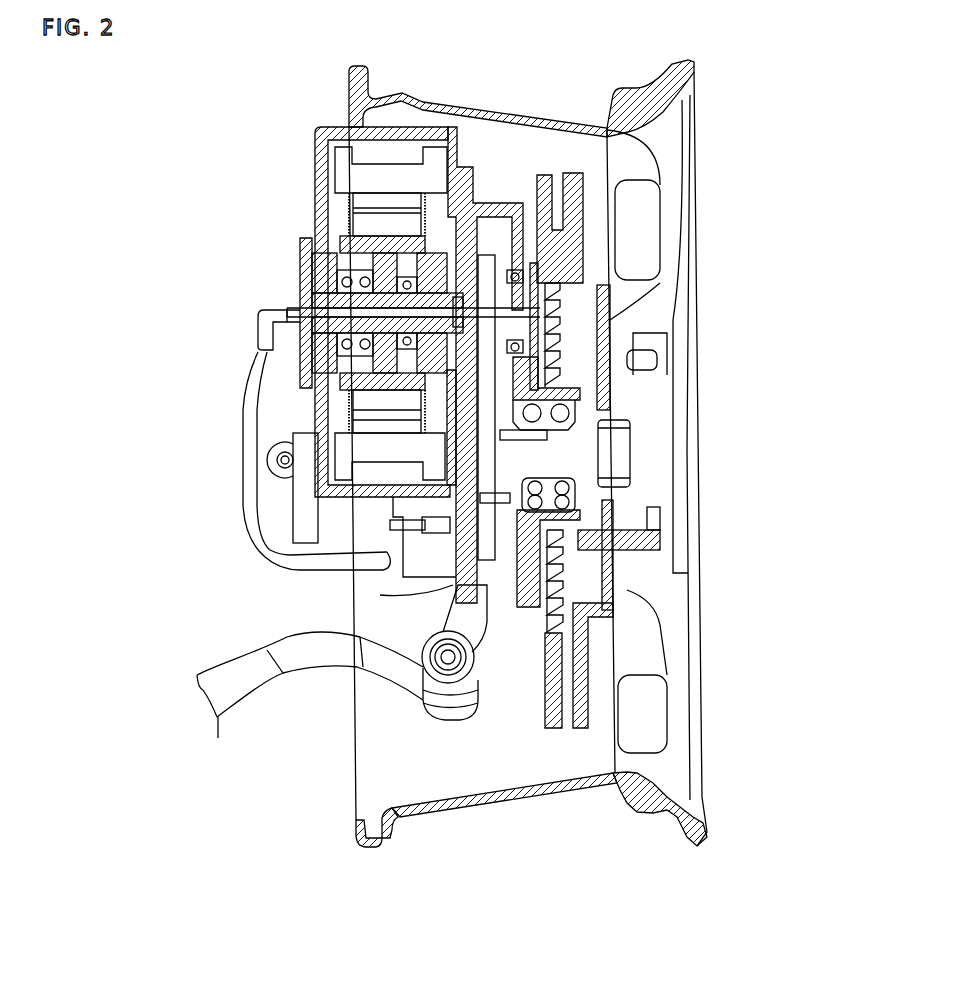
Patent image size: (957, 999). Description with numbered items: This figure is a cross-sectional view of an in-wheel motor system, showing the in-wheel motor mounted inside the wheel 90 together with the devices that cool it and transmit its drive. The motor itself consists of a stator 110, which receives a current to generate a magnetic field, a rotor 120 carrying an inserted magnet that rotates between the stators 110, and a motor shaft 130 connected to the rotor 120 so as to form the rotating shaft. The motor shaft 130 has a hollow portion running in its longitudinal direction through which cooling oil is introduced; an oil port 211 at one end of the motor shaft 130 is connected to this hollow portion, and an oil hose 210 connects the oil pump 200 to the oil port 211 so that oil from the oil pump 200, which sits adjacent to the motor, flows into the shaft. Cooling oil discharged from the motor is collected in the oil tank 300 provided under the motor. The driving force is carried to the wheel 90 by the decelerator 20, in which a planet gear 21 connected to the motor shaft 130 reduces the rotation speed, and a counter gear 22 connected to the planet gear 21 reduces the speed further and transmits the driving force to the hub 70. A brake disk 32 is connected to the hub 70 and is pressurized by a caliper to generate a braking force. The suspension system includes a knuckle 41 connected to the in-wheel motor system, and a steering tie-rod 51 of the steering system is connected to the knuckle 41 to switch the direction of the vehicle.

The decelerator 20 is at (774, 337).
The planet gear 21 is at (548, 288).
The counter gear 22 is at (497, 360).
The disk 32 is at (565, 242).
The knuckle 41 is at (465, 620).
The steering tie-rod 51 is at (313, 660).
The hub 70 is at (573, 458).
The wheel 90 is at (665, 138).
The stator 110 is at (343, 171).
The rotor 120 is at (370, 222).
The motor shaft 130 is at (350, 288).
The oil pump 200 is at (355, 595).
The oil hose 210 is at (246, 465).
The oil port 211 is at (257, 320).
The oil tank 300 is at (355, 523).